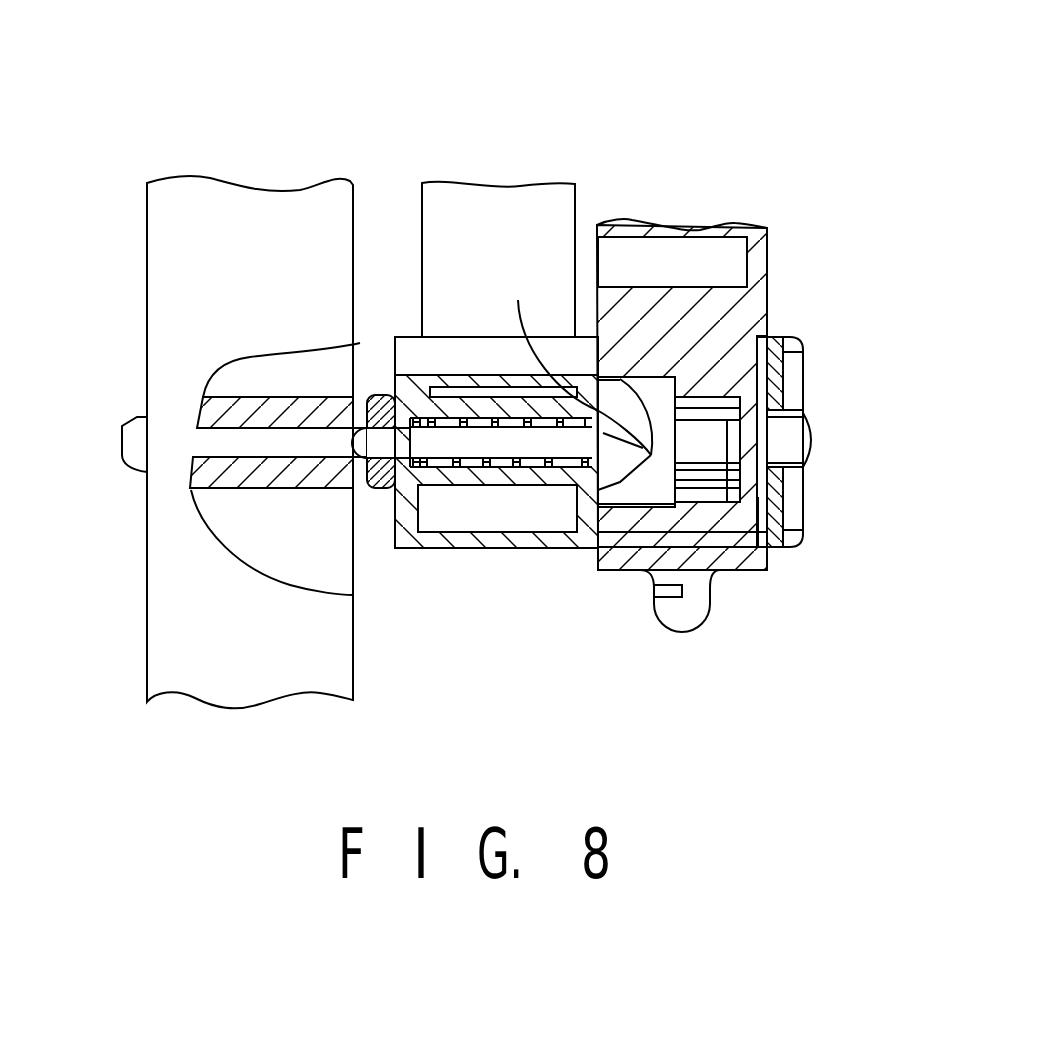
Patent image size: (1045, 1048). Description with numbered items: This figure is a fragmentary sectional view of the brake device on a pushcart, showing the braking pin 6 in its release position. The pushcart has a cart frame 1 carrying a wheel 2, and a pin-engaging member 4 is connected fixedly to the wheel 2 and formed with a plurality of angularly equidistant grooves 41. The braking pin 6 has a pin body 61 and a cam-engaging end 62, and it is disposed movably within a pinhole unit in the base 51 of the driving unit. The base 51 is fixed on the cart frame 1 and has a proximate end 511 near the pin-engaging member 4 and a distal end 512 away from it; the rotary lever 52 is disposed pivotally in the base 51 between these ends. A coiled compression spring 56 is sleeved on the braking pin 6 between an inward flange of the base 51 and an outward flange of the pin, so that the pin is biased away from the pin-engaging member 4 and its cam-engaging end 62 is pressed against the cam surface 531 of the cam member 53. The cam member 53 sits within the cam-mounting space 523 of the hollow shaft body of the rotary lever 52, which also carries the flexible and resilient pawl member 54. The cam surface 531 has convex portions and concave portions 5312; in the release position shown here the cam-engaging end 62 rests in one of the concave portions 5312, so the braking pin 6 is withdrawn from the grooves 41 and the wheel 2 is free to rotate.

The cart frame 1 is at (500, 203).
The wheel 2 is at (293, 172).
The pin-engaging member 4 is at (167, 433).
The grooves 41 is at (220, 408).
The braking pin 6 is at (380, 443).
The base 51 is at (462, 548).
The proximate end 511 is at (402, 428).
The distal end 512 is at (805, 500).
The rotary lever 52 is at (757, 318).
The cam-mounting space 523 is at (610, 390).
The cam member 53 is at (645, 488).
The cam surface 531 is at (600, 494).
The concave portions 5312 is at (566, 351).
The pawl member 54 is at (702, 452).
The coiled compression spring 56 is at (508, 464).
The pin body 61 is at (438, 452).
The cam-engaging end 62 is at (651, 455).